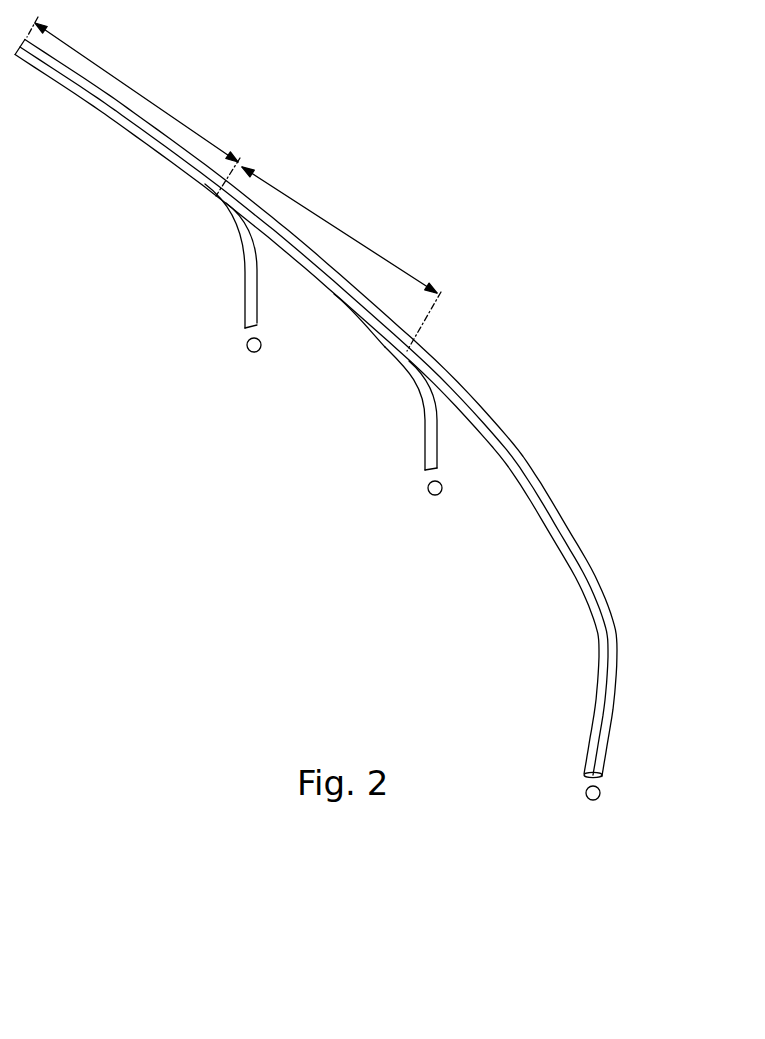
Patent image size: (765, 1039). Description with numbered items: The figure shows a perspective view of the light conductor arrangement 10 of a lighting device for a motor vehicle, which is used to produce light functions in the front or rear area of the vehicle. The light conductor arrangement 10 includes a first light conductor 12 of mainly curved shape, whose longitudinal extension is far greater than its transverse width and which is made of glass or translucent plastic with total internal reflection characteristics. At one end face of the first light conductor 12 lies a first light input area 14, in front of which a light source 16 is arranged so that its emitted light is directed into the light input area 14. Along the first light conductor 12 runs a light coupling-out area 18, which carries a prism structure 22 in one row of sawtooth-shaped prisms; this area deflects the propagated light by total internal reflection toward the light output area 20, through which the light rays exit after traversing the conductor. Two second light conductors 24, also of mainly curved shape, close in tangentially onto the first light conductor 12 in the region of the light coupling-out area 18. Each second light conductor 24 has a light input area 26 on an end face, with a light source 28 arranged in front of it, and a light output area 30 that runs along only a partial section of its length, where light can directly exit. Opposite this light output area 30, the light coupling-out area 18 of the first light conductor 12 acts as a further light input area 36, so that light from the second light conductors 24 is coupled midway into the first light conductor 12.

The light conductor arrangement 10 is at (538, 280).
The first light conductor 12 is at (481, 406).
The first light input area 14 is at (595, 777).
The light source 16 is at (595, 805).
The light coupling-out area 18 is at (510, 477).
The light output area 20 is at (517, 458).
The prism structure 22 is at (573, 552).
The second light conductor 24 is at (247, 273).
The light input area 26 is at (247, 328).
The light source 28 is at (254, 353).
The light output area 30 is at (370, 323).
The further light input area 36 is at (158, 107).